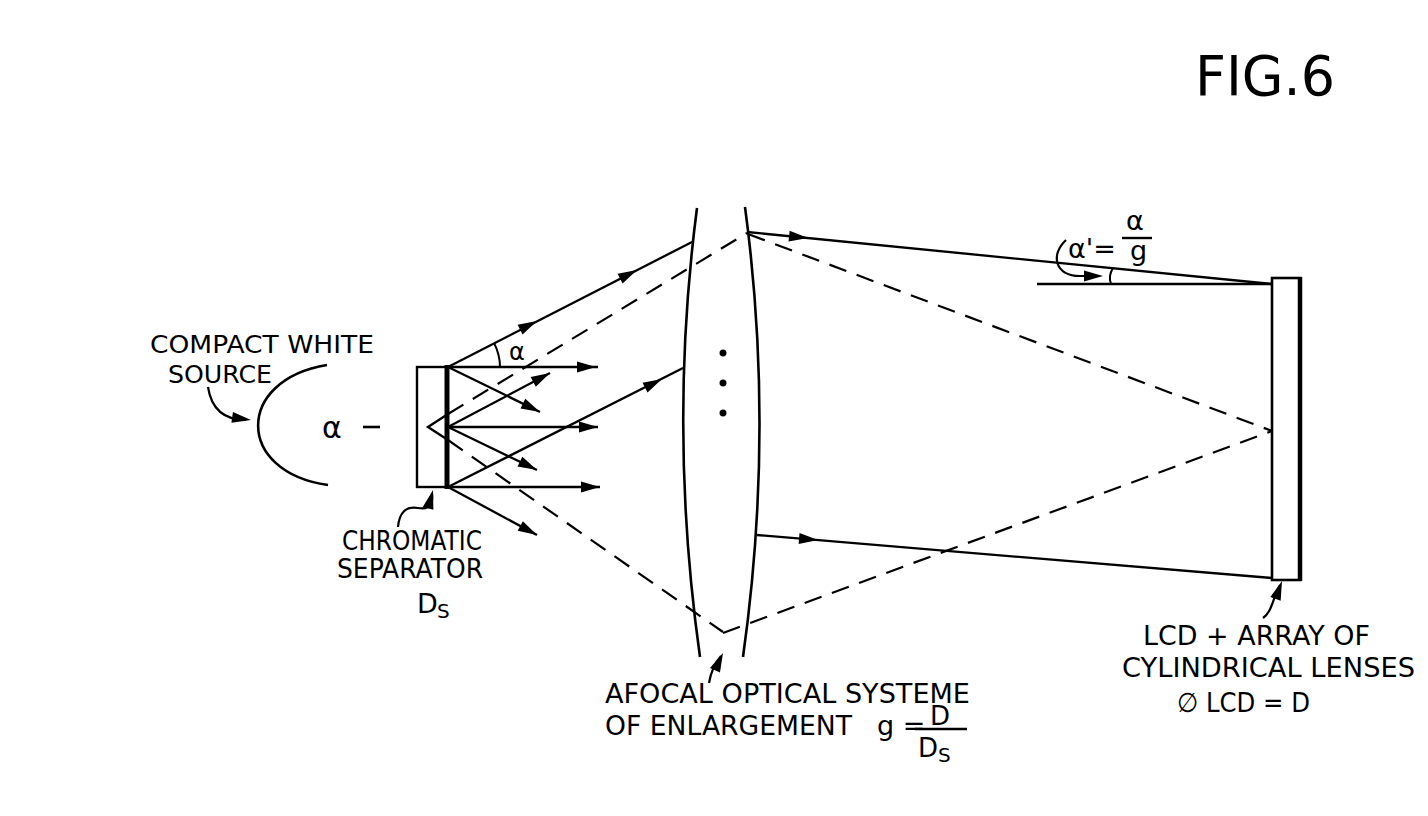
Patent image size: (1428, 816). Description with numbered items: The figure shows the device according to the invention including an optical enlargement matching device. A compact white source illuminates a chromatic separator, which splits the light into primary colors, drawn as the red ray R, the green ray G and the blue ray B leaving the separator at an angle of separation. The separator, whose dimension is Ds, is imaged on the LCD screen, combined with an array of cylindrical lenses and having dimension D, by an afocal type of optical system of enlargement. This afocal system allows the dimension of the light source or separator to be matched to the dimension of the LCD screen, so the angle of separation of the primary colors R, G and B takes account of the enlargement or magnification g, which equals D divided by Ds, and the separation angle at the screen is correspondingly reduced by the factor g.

The red primary color ray R is at (570, 304).
The green primary color ray G is at (565, 427).
The blue primary color ray B is at (502, 521).